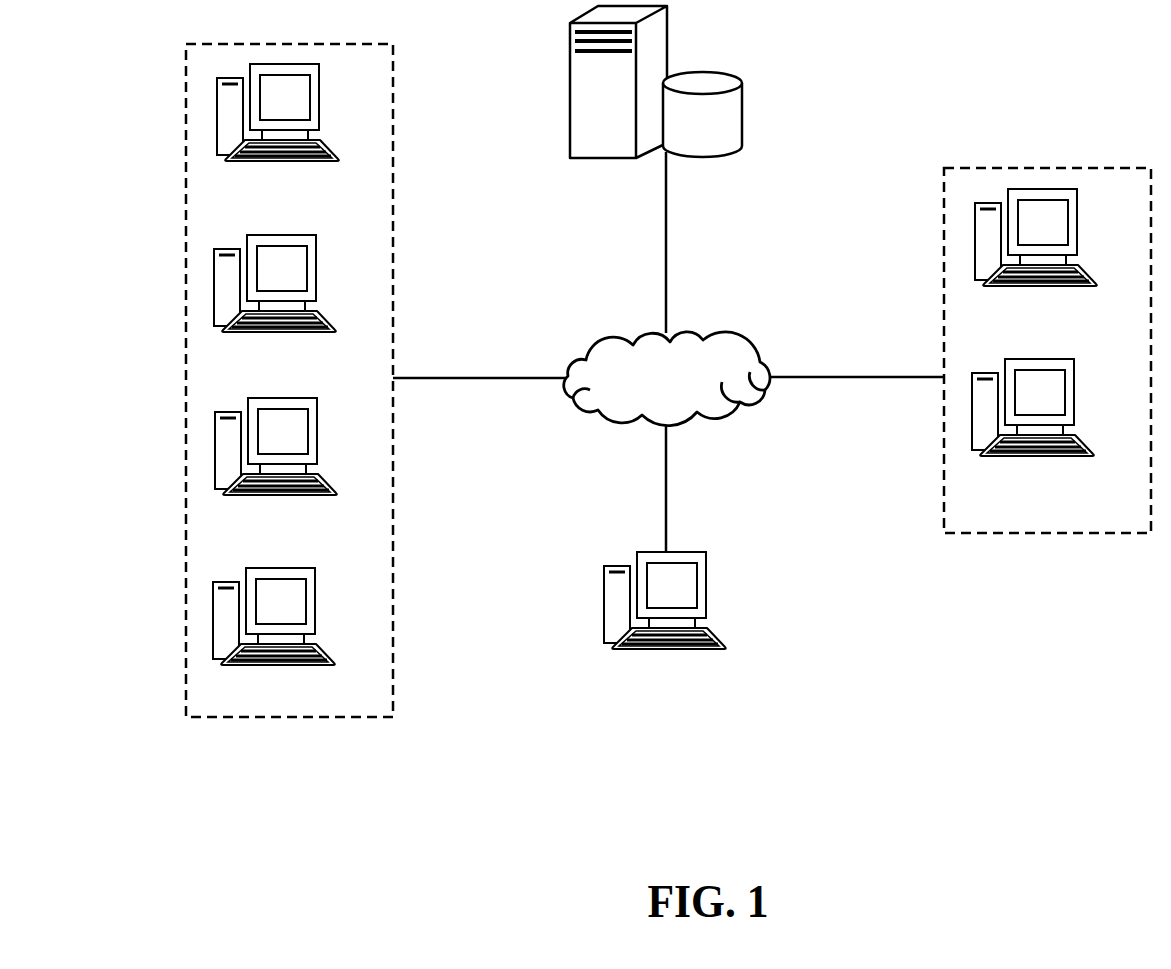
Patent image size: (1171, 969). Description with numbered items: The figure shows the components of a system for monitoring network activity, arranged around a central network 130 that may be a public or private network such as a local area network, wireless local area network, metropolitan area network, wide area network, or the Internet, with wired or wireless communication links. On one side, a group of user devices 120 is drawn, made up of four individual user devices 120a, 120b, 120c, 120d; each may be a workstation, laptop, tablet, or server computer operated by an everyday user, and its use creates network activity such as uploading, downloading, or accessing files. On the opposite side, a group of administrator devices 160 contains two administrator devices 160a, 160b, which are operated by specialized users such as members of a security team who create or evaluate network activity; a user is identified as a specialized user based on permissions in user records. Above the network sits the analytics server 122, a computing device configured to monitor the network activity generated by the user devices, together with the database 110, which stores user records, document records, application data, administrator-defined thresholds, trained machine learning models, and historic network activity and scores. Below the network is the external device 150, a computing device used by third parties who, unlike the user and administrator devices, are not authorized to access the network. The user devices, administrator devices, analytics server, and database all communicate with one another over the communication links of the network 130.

The database 110 is at (686, 129).
The user devices 120 is at (341, 97).
The user device 120a is at (264, 196).
The user device 120b is at (264, 362).
The user device 120c is at (258, 530).
The user device 120d is at (254, 696).
The analytics server 122 is at (588, 109).
The network 130 is at (667, 379).
The external device 150 is at (651, 592).
The administrator devices 160 is at (1100, 219).
The administrator device 160a is at (1022, 319).
The administrator device 160b is at (1022, 489).